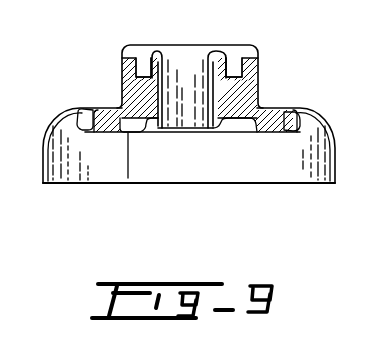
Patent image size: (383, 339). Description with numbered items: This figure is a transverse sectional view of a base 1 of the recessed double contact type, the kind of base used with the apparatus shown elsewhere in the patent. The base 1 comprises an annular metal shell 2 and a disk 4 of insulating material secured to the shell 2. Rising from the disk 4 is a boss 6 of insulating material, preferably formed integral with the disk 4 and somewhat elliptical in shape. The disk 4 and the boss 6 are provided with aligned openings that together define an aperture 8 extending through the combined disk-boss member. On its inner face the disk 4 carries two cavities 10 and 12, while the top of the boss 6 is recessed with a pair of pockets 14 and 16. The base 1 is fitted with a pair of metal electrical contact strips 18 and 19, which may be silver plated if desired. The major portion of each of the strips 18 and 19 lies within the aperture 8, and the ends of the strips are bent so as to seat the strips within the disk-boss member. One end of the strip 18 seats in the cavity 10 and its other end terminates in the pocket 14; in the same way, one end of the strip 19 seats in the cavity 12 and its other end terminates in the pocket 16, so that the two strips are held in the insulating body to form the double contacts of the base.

The base 1 is at (320, 60).
The annular metal shell 2 is at (231, 184).
The disk 4 is at (266, 109).
The boss 6 is at (126, 68).
The aperture 8 is at (204, 22).
The cavity 10 is at (128, 134).
The cavity 12 is at (252, 136).
The pocket 14 is at (137, 55).
The pocket 16 is at (243, 51).
The electrical contact strip 18 is at (155, 134).
The electrical contact strip 19 is at (226, 134).